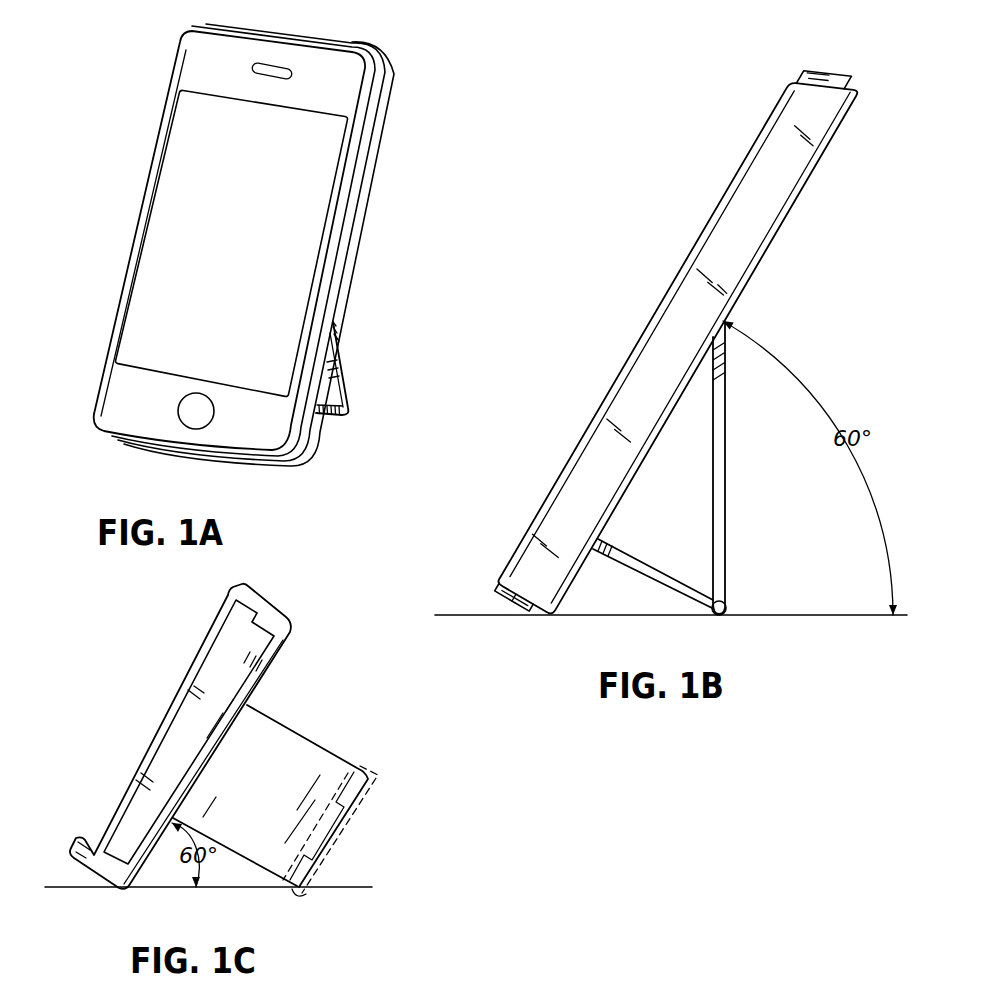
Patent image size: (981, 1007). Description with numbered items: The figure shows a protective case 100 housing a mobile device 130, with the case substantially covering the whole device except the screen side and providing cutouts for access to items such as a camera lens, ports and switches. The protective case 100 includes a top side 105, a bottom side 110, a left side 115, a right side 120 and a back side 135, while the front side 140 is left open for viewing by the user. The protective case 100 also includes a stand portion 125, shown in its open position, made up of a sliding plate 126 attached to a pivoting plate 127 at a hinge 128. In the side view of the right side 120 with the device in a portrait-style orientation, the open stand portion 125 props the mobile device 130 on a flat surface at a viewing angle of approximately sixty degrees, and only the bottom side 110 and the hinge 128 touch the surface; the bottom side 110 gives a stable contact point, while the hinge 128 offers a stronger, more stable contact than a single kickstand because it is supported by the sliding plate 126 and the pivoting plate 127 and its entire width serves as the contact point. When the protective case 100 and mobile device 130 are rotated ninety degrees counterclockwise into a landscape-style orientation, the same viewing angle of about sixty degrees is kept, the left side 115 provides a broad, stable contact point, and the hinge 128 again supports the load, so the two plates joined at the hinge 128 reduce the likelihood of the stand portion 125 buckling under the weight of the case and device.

In FIG. 1A, the protective case 100 is at (172, 68).
In FIG. 1B, the protective case 100 is at (838, 118).
In FIG. 1A, the top side 105 is at (368, 52).
In FIG. 1A, the bottom side 110 is at (240, 467).
In FIG. 1B, the bottom side 110 is at (527, 605).
In FIG. 1C, the bottom side 110 is at (250, 677).
In FIG. 1A, the left side 115 is at (136, 226).
In FIG. 1C, the left side 115 is at (82, 872).
In FIG. 1A, the right side 120 is at (368, 233).
In FIG. 1B, the right side 120 is at (757, 163).
In FIG. 1A, the stand portion 125 is at (352, 345).
In FIG. 1B, the stand portion 125 is at (701, 468).
In FIG. 1B, the sliding plate 126 is at (727, 498).
In FIG. 1B, the pivoting plate 127 is at (647, 565).
In FIG. 1C, the pivoting plate 127 is at (307, 740).
In FIG. 1B, the hinge 128 is at (725, 606).
In FIG. 1C, the hinge 128 is at (378, 776).
In FIG. 1A, the mobile device 130 is at (133, 407).
In FIG. 1B, the mobile device 130 is at (807, 73).
In FIG. 1C, the mobile device 130 is at (190, 672).
In FIG. 1B, the back side 135 is at (803, 205).
In FIG. 1A, the front side 140 is at (190, 327).